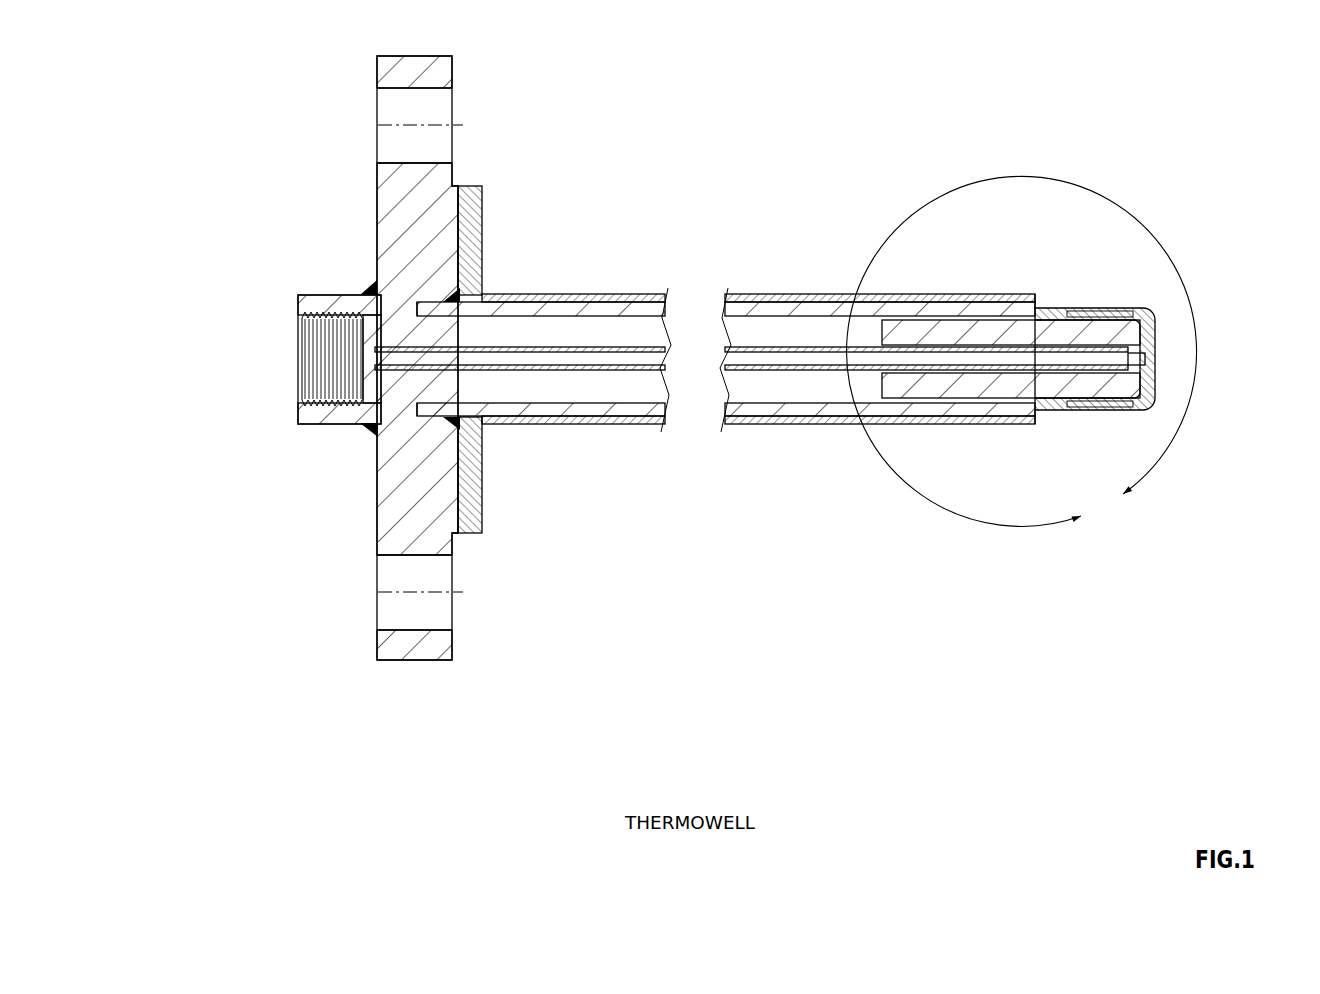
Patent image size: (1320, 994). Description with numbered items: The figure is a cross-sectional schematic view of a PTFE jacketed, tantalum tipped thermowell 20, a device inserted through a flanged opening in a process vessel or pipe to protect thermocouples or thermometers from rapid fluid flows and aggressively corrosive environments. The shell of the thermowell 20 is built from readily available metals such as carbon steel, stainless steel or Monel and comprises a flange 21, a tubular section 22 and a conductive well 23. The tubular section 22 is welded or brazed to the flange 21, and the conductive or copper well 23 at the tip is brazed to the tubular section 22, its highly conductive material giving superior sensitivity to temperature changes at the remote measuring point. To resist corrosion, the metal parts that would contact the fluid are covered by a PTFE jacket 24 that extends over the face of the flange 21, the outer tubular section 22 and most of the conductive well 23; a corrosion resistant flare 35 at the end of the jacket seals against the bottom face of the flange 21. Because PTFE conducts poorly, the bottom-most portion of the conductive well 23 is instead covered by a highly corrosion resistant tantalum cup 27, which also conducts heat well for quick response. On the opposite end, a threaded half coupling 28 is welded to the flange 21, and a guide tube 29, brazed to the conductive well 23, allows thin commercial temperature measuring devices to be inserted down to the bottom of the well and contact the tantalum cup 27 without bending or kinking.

The thermowell 20 is at (656, 60).
The flange 21 is at (390, 645).
The tubular section 22 is at (573, 410).
The conductive well 23 is at (920, 380).
The PTFE jacket 24 is at (965, 300).
The tantalum cup 27 is at (1125, 300).
The threaded half coupling 28 is at (315, 300).
The guide tube 29 is at (392, 377).
The corrosion resistant flare 35 is at (458, 535).